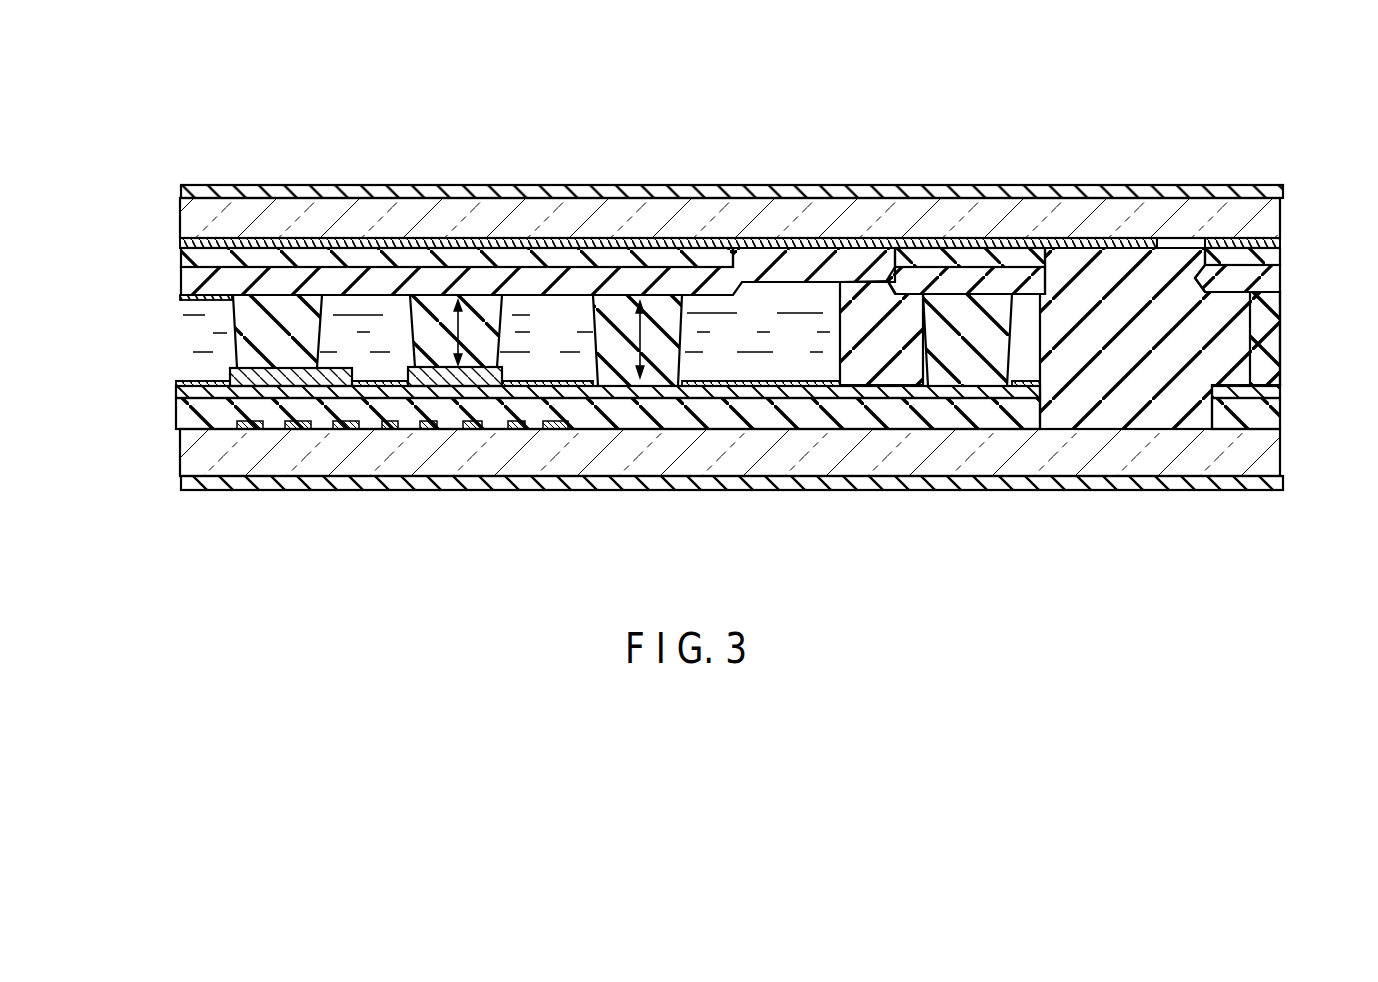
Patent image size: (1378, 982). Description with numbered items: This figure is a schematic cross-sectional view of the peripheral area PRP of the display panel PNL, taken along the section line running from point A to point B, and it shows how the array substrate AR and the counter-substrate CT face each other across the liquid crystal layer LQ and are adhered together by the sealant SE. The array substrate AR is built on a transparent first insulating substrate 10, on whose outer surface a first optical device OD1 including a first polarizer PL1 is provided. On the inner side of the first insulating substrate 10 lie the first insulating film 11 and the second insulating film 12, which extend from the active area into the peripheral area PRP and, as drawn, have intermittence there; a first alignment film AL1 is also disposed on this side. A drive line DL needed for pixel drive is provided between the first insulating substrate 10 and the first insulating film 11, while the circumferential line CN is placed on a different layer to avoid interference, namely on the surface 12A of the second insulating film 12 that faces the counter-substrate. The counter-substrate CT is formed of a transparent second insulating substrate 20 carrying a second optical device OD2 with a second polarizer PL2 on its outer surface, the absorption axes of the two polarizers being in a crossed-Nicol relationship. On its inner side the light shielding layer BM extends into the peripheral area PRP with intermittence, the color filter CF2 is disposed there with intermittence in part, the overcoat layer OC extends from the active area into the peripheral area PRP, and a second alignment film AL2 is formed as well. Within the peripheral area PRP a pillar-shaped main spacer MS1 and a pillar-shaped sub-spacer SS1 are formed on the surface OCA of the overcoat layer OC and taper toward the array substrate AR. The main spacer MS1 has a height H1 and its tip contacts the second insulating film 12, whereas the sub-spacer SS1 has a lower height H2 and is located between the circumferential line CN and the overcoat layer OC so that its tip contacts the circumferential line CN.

The peripheral area PRP is at (1283, 100).
The display panel PNL is at (1290, 191).
The counter-substrate CT is at (1293, 244).
The array substrate AR is at (1292, 413).
The second optical device OD2 is at (182, 191).
The second polarizer PL2 is at (684, 172).
The second insulating substrate 20 is at (195, 220).
The color filter CF2 is at (610, 250).
The overcoat layer OC is at (195, 278).
The light shielding layer BM is at (1000, 250).
The second alignment film AL2 is at (182, 297).
The sealant SE is at (1236, 363).
The sub-spacer SS1 is at (290, 297).
The main spacer MS1 is at (655, 353).
The height of sub-spacer H2 is at (456, 300).
The height of main spacer H1 is at (638, 345).
The surface of overcoat layer OCA is at (546, 313).
The liquid crystal layer LQ is at (783, 300).
The first alignment film AL1 is at (185, 382).
The surface of second insulating film 12A is at (199, 380).
The circumferential line CN is at (252, 386).
The second insulating film 12 is at (178, 391).
The first insulating film 11 is at (178, 413).
The drive line DL is at (390, 430).
The first insulating substrate 10 is at (190, 452).
The first optical device OD1 is at (185, 483).
The first polarizer PL1 is at (678, 498).
The line A-B end point A is at (184, 513).
The line A-B end point B is at (1285, 507).